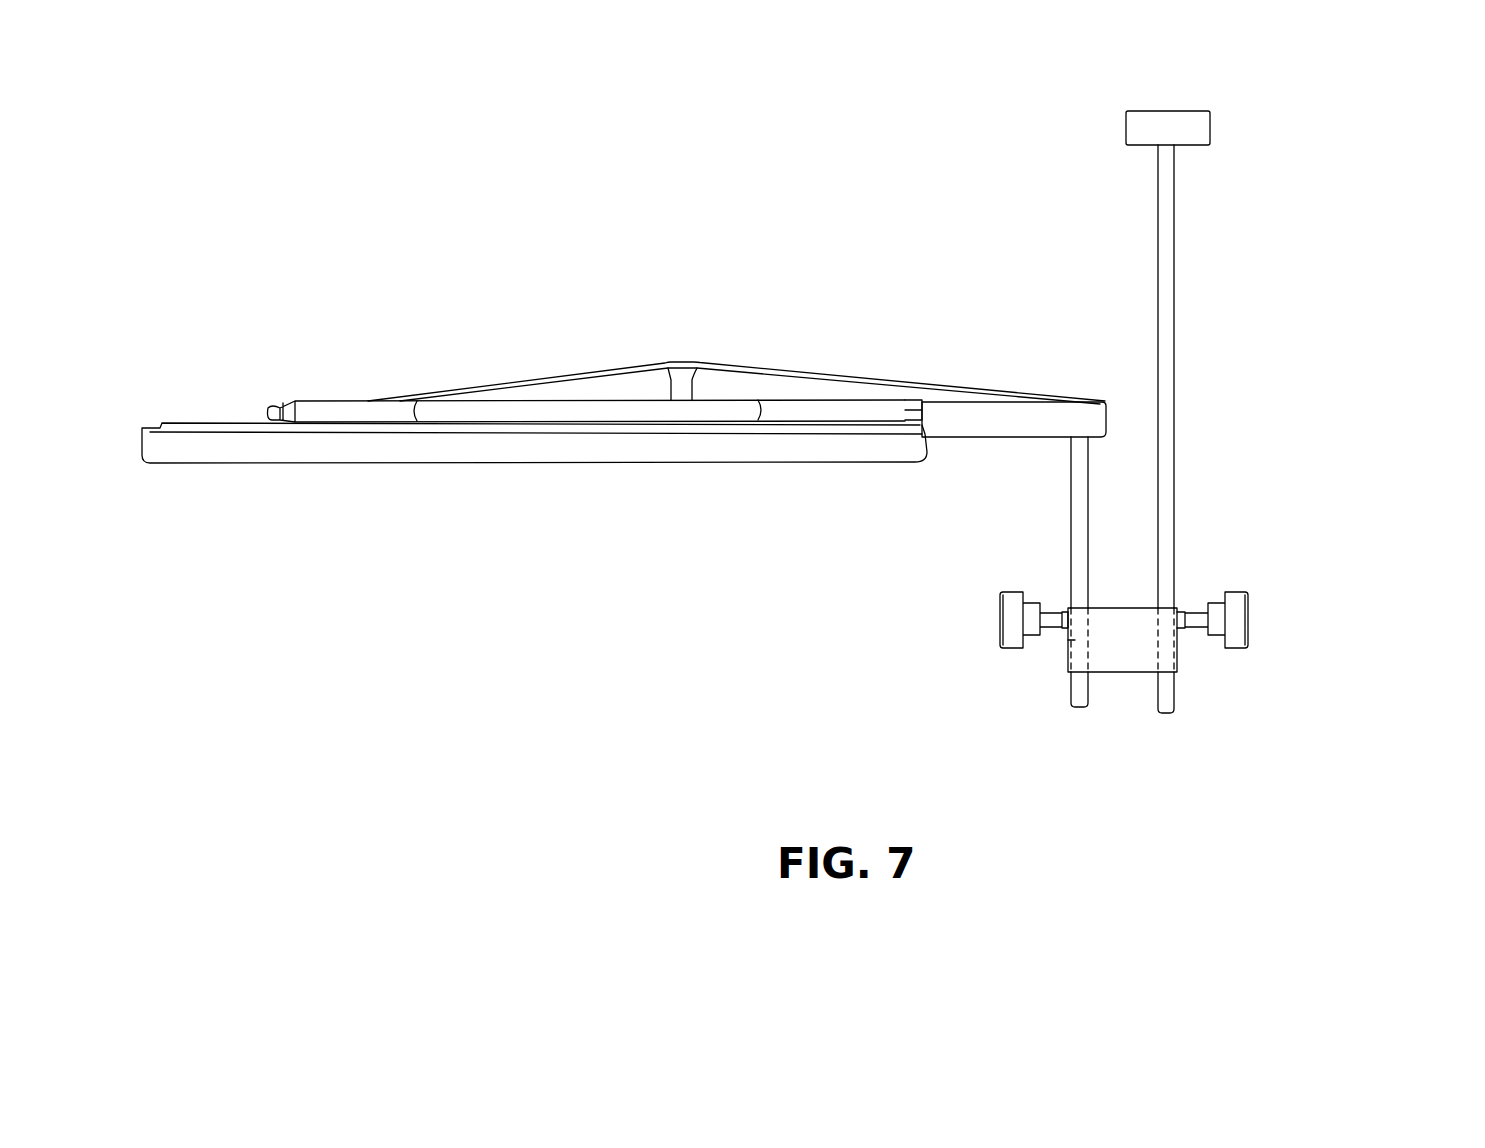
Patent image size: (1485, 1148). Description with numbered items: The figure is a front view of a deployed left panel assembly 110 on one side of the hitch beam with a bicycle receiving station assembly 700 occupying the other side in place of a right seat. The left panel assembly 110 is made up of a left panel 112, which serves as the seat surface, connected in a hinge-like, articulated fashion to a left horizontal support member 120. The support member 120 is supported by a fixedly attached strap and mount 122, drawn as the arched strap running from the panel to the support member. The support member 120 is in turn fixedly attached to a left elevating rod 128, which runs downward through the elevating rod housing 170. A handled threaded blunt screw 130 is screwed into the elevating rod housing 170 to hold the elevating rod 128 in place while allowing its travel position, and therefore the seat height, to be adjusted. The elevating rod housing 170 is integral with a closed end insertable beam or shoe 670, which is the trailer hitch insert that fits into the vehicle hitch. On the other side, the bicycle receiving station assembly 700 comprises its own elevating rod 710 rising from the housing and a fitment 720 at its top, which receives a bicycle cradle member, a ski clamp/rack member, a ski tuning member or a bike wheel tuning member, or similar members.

The left panel assembly 110 is at (281, 234).
The left panel 112 is at (534, 511).
The left horizontal support member 120 is at (1014, 305).
The strap and mount 122 is at (687, 313).
The left elevating rod 128 is at (979, 572).
The handled threaded blunt screw 130 is at (1189, 614).
The elevating rod housing 170 is at (1016, 701).
The closed end insertable beam or shoe 670 is at (1153, 689).
The bicycle receiving station assembly 700 is at (1369, 232).
The elevating rod 710 is at (1238, 429).
The fitment 720 is at (1240, 132).